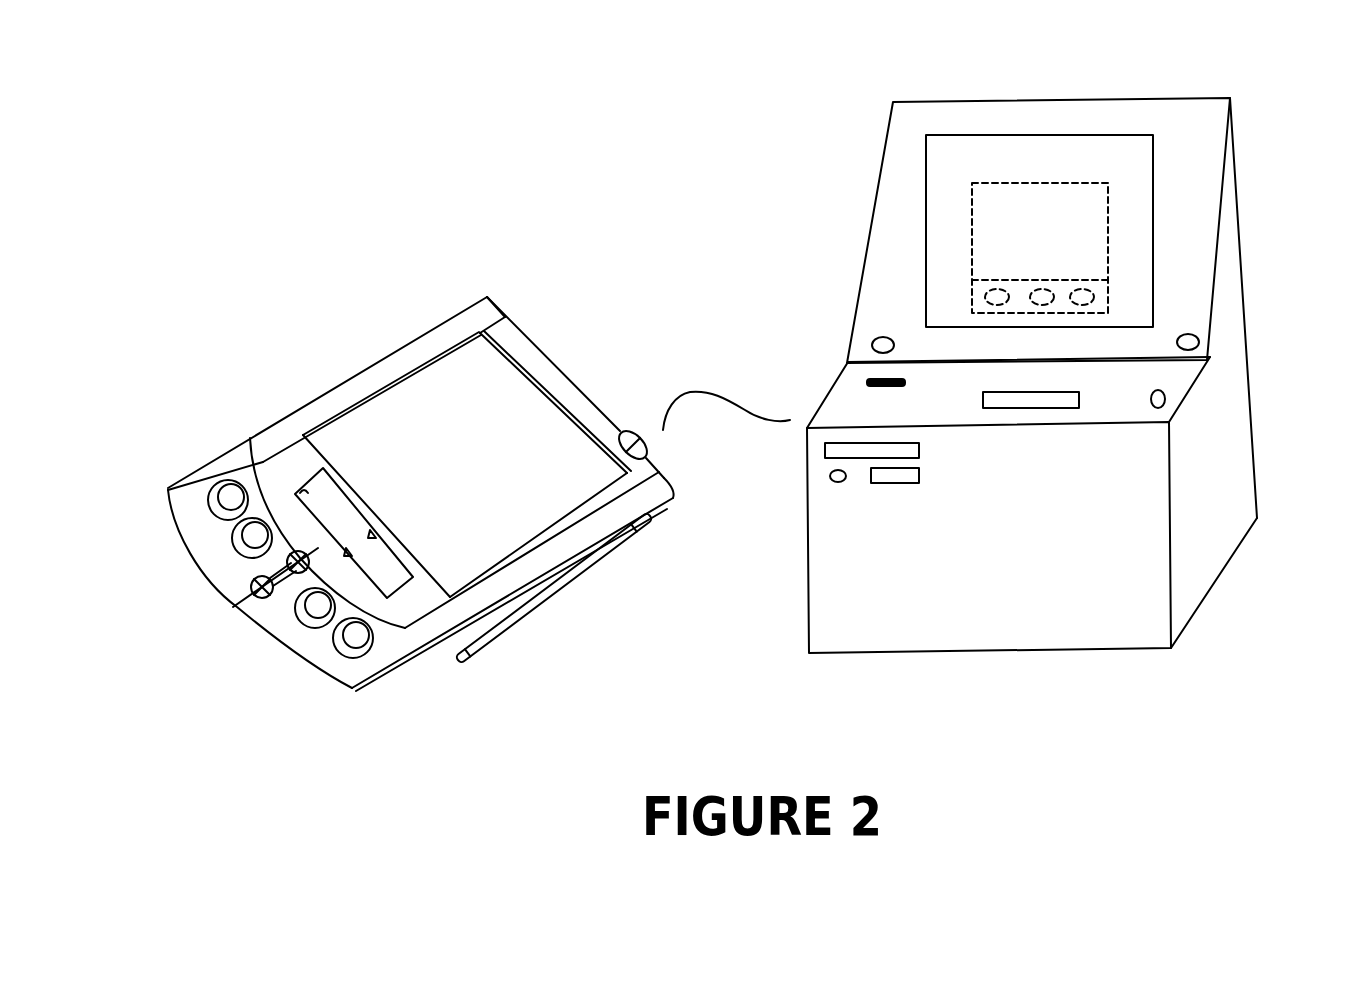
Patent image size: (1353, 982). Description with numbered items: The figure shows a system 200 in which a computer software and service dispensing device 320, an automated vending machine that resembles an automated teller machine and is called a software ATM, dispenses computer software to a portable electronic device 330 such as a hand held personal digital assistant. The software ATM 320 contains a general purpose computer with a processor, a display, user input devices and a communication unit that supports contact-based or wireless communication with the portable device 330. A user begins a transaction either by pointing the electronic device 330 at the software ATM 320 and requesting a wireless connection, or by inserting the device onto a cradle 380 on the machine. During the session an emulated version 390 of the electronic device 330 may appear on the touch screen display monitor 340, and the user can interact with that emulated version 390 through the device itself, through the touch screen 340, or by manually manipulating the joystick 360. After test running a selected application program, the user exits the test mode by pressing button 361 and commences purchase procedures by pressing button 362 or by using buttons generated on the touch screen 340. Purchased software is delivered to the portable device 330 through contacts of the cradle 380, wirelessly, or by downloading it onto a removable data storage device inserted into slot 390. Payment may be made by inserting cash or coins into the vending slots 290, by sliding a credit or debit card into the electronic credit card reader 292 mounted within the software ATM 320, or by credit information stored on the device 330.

The system 200 is at (194, 40).
The computer software and service dispensing device 320 is at (912, 82).
The portable electronic device 330 is at (452, 457).
The touch screen display monitor 340 is at (1024, 169).
The emulated version / slot 390 is at (1030, 248).
The button 361 is at (895, 345).
The button 362 is at (1177, 343).
The cradle 380 is at (983, 400).
The joystick 360 is at (1149, 400).
The electronic credit card reader 292 is at (919, 448).
The vending slots 290 is at (919, 475).